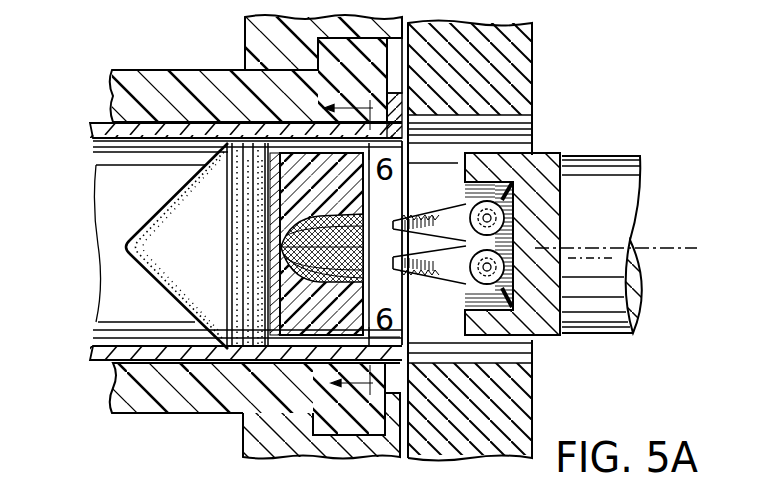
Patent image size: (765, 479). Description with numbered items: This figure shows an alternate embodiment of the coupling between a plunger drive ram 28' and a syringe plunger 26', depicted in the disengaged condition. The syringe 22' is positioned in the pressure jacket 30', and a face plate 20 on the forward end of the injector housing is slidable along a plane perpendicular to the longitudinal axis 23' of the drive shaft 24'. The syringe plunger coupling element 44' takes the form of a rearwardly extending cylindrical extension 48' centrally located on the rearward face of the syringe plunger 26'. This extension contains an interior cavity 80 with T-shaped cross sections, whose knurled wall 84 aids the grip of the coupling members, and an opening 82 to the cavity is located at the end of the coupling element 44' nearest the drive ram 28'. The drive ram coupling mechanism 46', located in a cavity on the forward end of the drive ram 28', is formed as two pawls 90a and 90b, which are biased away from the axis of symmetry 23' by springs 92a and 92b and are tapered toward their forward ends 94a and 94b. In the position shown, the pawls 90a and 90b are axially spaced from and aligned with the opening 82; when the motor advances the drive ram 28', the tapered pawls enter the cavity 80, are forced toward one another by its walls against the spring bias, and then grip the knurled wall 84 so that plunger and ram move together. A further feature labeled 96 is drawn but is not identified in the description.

The face plate 20 is at (246, 23).
The pressure jacket 30' is at (237, 78).
The cylindrical extension 48' is at (283, 78).
The syringe 22' is at (214, 241).
The syringe plunger 26' is at (135, 246).
The stippled coating layer 96 is at (158, 212).
The interior cavity 80 is at (279, 241).
The knurled wall 84 is at (279, 258).
The forward end of second pawl 94b is at (244, 312).
The opening 82 is at (373, 230).
The syringe plunger coupling element 44' is at (255, 413).
The forward end of first pawl 94a is at (405, 190).
The drive ram coupling mechanism 46' is at (528, 220).
The first pawl 90a is at (445, 208).
The second pawl 90b is at (442, 283).
The spring 92a is at (510, 193).
The spring 92b is at (541, 338).
The drive shaft 24' is at (639, 232).
The plunger drive ram 28' is at (635, 307).
The longitudinal axis 23' is at (631, 226).